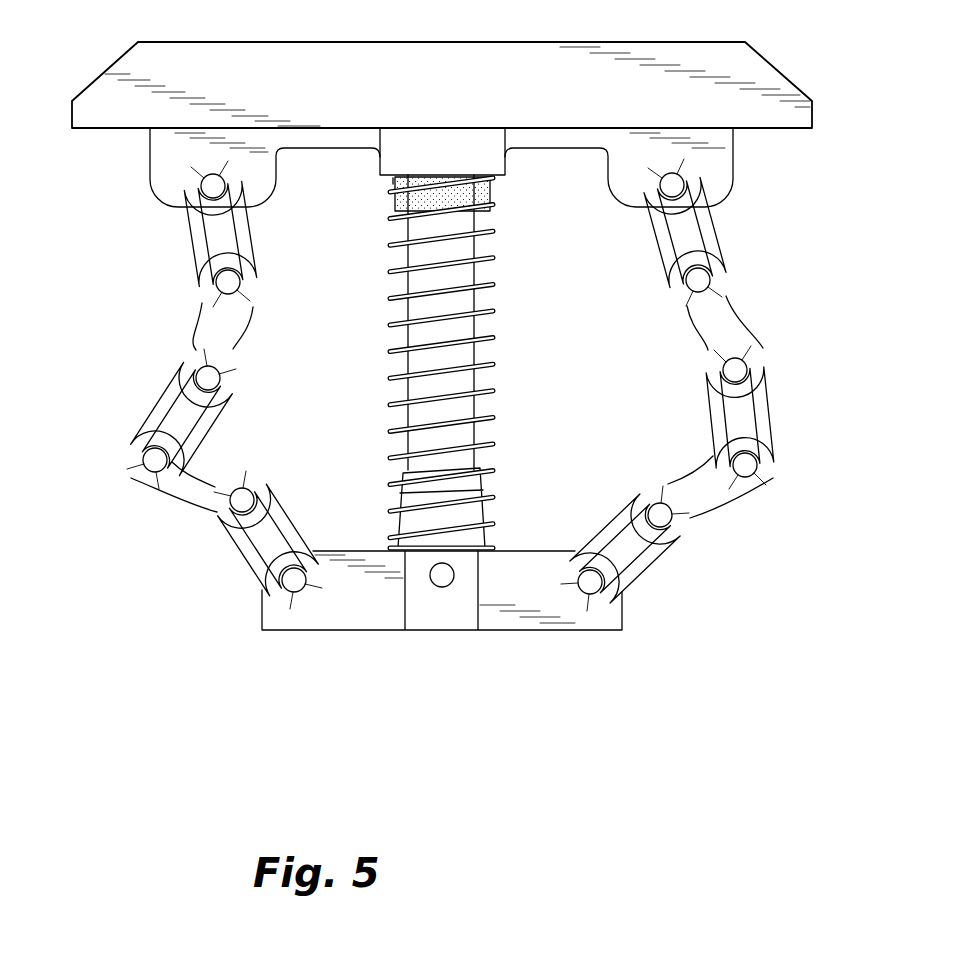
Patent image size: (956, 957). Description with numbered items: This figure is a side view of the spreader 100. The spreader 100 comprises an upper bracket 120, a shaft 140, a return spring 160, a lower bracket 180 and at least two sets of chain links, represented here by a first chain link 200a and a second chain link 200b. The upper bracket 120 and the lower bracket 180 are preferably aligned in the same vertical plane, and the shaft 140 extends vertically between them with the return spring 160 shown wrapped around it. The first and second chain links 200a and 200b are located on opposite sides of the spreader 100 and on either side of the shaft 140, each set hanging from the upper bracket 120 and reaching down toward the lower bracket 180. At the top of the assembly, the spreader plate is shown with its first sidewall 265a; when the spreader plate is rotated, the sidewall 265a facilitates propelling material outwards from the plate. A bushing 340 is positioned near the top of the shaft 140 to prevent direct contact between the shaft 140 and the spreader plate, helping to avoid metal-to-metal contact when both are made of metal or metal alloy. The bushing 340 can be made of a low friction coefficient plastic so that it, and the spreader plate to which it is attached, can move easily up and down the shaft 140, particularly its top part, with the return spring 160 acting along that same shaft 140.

The spreader 100 is at (634, 675).
The upper bracket 120 is at (733, 181).
The shaft 140 is at (426, 333).
The return spring 160 is at (494, 366).
The lower bracket 180 is at (384, 622).
The first chain link 200a is at (776, 481).
The second chain link 200b is at (134, 480).
The first sidewall 265a is at (468, 91).
The bushing 340 is at (485, 191).